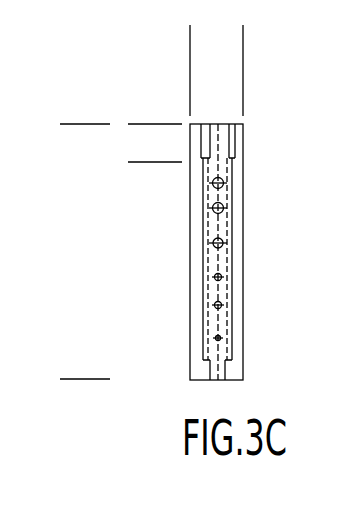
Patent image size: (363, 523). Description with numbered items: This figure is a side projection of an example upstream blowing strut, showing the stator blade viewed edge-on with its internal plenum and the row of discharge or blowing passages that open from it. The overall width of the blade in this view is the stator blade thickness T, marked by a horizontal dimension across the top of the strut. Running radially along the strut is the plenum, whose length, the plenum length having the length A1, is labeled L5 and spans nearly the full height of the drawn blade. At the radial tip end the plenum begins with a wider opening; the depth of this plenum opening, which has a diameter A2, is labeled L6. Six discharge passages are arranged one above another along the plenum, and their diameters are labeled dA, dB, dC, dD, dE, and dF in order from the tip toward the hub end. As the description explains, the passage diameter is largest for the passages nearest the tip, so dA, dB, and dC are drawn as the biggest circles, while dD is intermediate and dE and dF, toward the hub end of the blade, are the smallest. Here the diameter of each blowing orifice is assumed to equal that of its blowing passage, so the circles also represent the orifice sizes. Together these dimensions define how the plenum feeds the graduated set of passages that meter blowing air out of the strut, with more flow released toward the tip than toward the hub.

The stator blade thickness T is at (297, 52).
The length of the plenum L5 is at (84, 124).
The depth of the plenum opening L6 is at (156, 72).
The diameter of blowing passage A dA is at (225, 178).
The diameter of blowing passage B dB is at (225, 205).
The diameter of blowing passage C dC is at (225, 238).
The diameter of blowing passage D dD is at (226, 270).
The diameter of blowing passage E dE is at (226, 300).
The diameter of blowing passage F dF is at (226, 332).